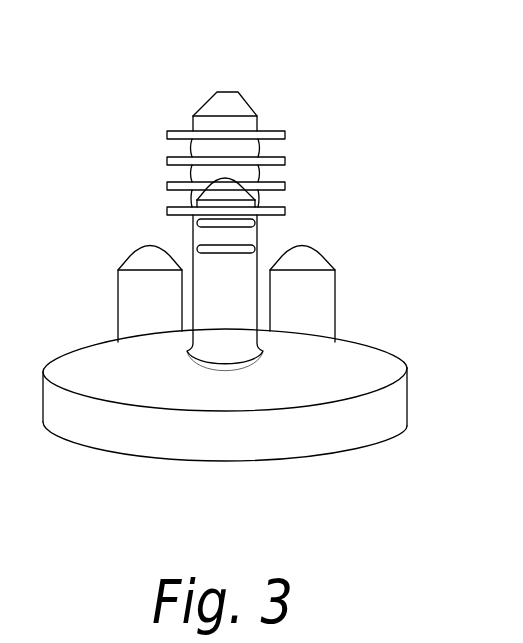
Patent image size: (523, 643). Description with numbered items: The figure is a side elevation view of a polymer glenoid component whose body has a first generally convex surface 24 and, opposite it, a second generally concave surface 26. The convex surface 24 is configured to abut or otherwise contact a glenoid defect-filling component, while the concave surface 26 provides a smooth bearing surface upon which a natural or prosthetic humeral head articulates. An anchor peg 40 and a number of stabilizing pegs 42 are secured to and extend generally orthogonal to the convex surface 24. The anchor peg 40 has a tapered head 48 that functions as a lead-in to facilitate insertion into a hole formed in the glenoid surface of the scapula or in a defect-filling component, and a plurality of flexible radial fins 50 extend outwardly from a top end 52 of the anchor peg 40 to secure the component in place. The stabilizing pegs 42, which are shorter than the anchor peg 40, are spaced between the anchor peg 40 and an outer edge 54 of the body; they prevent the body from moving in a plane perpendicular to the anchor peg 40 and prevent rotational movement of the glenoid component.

The convex surface 24 is at (386, 361).
The concave surface 26 is at (313, 459).
The outer edge 54 is at (407, 405).
The stabilizing pegs 42 is at (125, 290).
The anchor peg 40 is at (215, 137).
The tapered head 48 is at (250, 100).
The flexible radial fins 50 is at (285, 134).
The top end 52 is at (190, 148).